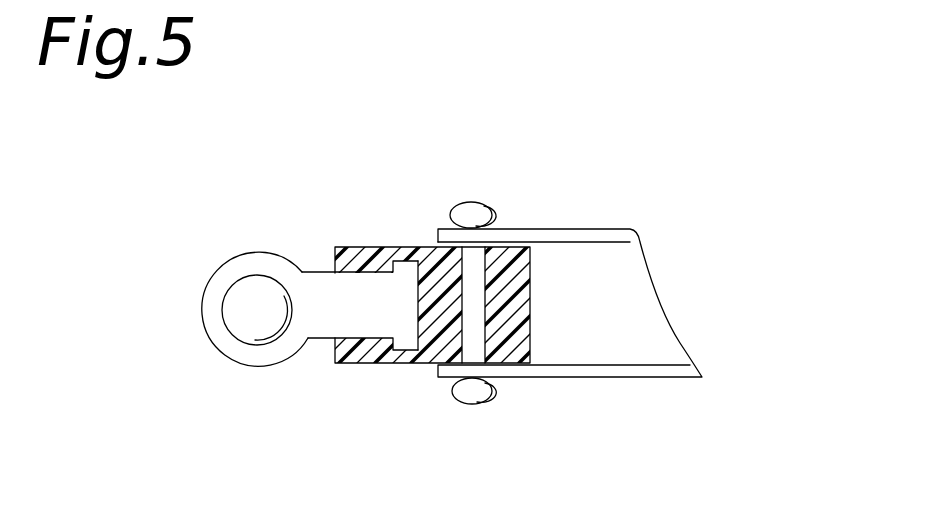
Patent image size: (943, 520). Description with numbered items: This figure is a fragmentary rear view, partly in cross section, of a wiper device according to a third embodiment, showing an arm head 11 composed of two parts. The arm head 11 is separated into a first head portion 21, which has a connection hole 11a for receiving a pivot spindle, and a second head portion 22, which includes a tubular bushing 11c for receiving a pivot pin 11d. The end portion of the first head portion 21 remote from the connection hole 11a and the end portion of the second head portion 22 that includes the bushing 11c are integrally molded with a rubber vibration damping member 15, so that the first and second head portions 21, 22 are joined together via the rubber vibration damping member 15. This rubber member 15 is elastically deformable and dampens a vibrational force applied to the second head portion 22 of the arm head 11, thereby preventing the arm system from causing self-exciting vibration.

The arm head 11 is at (403, 238).
The connection hole 11a is at (253, 313).
The tubular bushing 11c is at (480, 337).
The pivot pin 11d is at (480, 388).
The rubber vibration damping member 15 is at (432, 348).
The first head portion 21 is at (335, 316).
The second head portion 22 is at (563, 233).